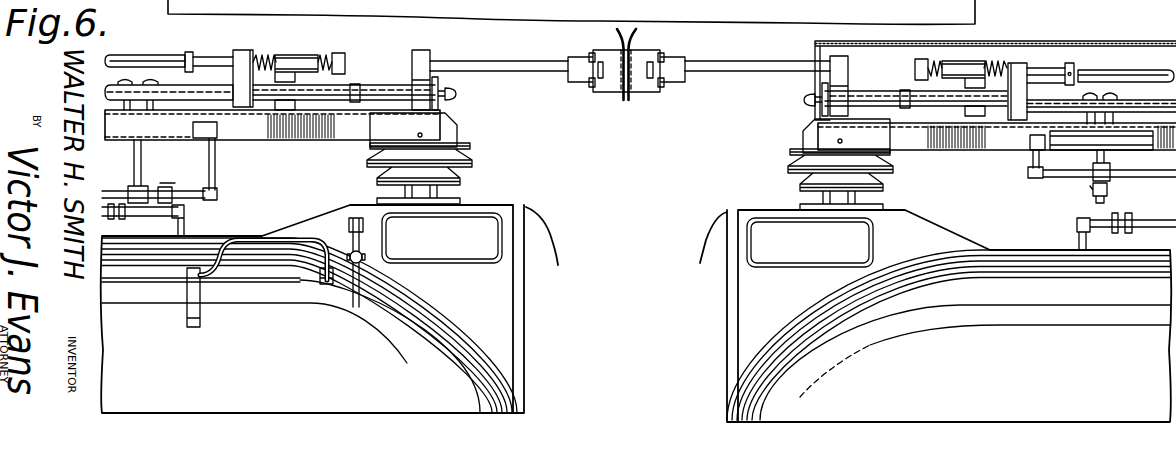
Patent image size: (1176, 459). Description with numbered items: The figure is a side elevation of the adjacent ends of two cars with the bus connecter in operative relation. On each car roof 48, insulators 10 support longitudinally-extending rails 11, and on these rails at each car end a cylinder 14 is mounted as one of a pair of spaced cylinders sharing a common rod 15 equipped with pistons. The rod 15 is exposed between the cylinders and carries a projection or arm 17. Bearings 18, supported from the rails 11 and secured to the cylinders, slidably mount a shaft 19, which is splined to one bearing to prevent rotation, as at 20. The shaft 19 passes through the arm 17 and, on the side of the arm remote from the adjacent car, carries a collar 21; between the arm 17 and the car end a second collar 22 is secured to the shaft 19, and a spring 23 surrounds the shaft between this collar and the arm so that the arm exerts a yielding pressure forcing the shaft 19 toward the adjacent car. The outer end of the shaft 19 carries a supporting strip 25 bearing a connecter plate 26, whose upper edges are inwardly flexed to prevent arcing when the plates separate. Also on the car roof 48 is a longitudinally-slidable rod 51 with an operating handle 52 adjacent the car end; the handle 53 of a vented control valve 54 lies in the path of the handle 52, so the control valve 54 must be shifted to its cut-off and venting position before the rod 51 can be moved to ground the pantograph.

The insulators 10 is at (480, 163).
The rails 11 is at (253, 138).
The cylinder 14 is at (366, 80).
The rod 15 is at (192, 93).
The arm 17 is at (243, 63).
The bearings 18 is at (424, 58).
The shaft 19 is at (496, 73).
The spline 20 is at (162, 51).
The collar 21 is at (194, 55).
The second collar 22 is at (340, 52).
The spring 23 is at (324, 78).
The supporting strip 25 is at (650, 93).
The connecter plate 26 is at (612, 31).
The car roof 48 is at (283, 345).
The rod 51 is at (162, 282).
The operating handle 52 is at (322, 279).
The handle 53 is at (368, 258).
The control valve 54 is at (350, 256).